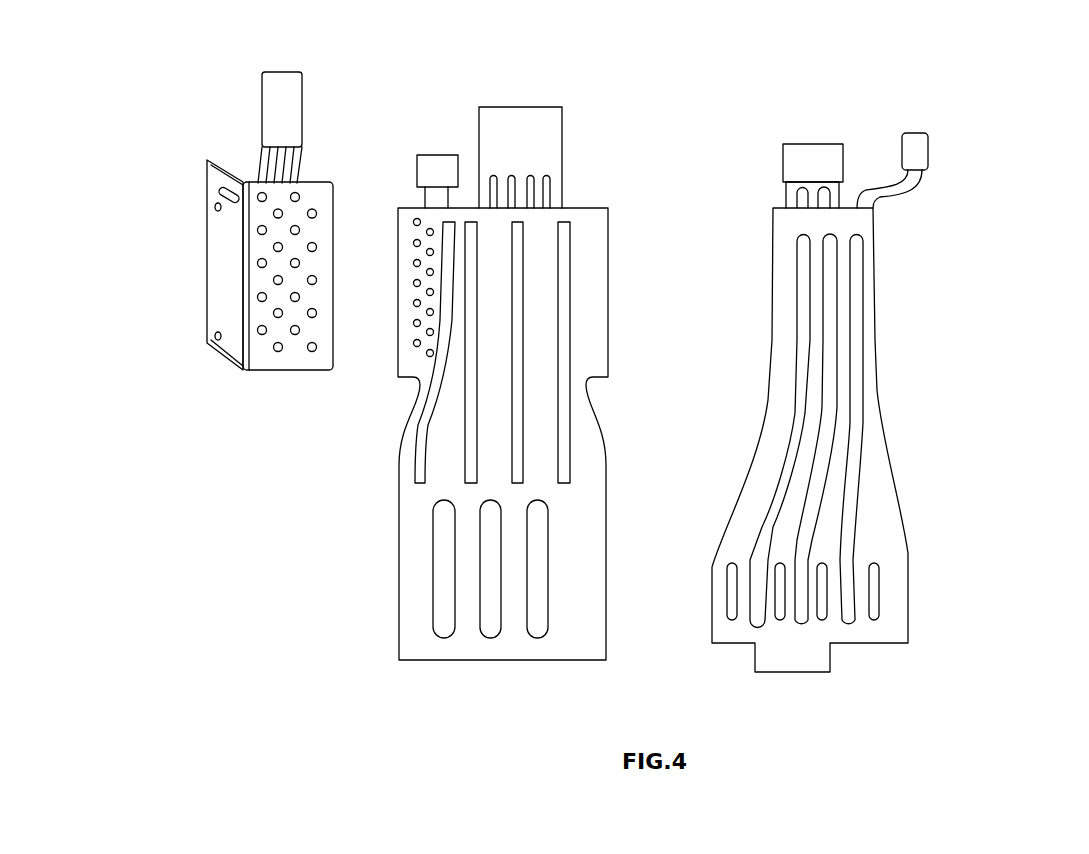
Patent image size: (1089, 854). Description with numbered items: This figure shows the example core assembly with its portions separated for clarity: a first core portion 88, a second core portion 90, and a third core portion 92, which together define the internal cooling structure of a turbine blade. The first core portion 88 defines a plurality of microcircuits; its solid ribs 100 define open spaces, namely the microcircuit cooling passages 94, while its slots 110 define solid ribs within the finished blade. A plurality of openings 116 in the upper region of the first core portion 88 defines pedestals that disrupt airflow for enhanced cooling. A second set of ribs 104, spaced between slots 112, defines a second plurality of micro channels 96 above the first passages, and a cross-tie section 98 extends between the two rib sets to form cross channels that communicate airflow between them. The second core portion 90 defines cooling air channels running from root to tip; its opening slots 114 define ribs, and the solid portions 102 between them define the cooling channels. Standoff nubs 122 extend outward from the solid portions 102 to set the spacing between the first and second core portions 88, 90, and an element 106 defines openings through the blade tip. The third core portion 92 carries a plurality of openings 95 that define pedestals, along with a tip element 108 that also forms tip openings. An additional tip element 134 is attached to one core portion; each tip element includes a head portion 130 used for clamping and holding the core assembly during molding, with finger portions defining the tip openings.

The first core portion 88 is at (316, 684).
The second core portion 90 is at (952, 337).
The third core portion 92 is at (210, 383).
The microcircuit cooling passages 94 is at (382, 498).
The openings 95 is at (339, 323).
The micro channels 96 is at (382, 217).
The cross-tie section 98 is at (620, 510).
The ribs 100 is at (567, 610).
The solid portions 102 is at (780, 622).
The second set of ribs 104 is at (462, 225).
The element 106 is at (949, 210).
The tip element 108 is at (326, 167).
The slots 110 is at (443, 550).
The slots 112 is at (472, 455).
The opening slots 114 is at (777, 494).
The openings 116 is at (437, 208).
The standoff nubs 122 is at (780, 570).
The head portion 130 is at (533, 124).
The tip element 134 is at (434, 164).